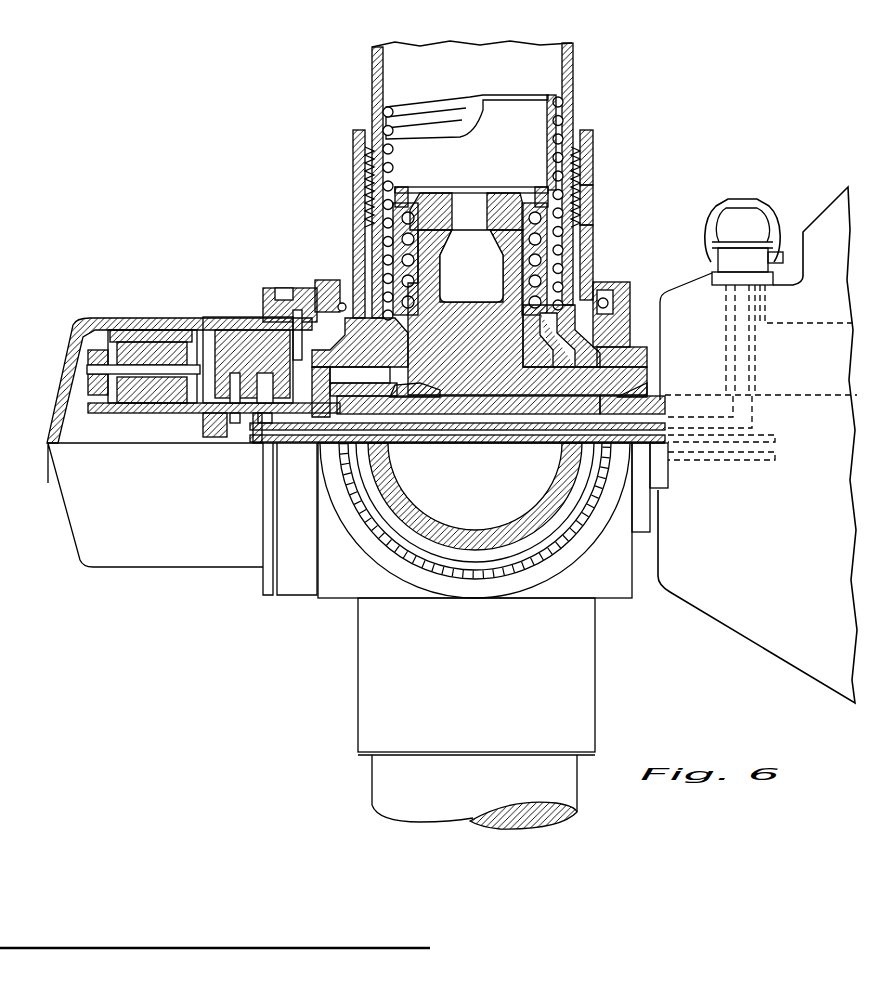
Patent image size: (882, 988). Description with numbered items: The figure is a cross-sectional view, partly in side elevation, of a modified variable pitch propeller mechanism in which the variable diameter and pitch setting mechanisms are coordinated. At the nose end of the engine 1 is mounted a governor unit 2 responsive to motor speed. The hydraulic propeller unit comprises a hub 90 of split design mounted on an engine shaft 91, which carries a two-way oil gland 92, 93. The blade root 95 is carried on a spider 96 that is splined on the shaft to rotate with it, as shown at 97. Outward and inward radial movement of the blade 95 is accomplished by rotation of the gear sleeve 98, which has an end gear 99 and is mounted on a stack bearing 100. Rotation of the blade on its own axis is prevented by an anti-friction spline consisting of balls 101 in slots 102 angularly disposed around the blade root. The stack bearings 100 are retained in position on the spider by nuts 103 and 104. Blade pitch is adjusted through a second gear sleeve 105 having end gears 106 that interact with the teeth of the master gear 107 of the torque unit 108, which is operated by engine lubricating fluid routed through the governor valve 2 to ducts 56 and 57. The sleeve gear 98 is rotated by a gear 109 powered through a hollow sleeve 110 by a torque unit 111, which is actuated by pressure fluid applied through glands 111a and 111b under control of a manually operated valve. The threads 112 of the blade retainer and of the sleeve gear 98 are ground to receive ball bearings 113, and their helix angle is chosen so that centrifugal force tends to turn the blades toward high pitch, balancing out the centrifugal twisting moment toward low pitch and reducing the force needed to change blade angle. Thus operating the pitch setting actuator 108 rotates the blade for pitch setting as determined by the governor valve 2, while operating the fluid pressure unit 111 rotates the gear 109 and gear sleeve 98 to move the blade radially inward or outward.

The engine nose end 1 is at (712, 618).
The governor unit 2 is at (741, 197).
The duct 56 is at (240, 438).
The duct 57 is at (258, 443).
The hub 90 is at (325, 282).
The engine shaft 91 is at (668, 401).
The two-way oil gland 92 is at (531, 443).
The two-way oil gland 93 is at (511, 431).
The blade root 95 is at (574, 81).
The spider 96 is at (462, 298).
The spline 97 is at (470, 415).
The gear sleeve 98 is at (548, 120).
The end gear 99 is at (572, 338).
The stack bearing 100 is at (506, 190).
The balls 101 is at (594, 191).
The slots 102 is at (594, 161).
The nut 103 is at (480, 225).
The nut 104 is at (405, 190).
The gear sleeve 105 is at (594, 251).
The end gears 106 is at (352, 326).
The master gear 107 is at (314, 290).
The torque unit 108 is at (243, 321).
The gear 109 is at (351, 371).
The hollow sleeve 110 is at (162, 421).
The torque unit 111 is at (188, 320).
The gland 111a is at (765, 437).
The gland 111b is at (758, 459).
The threads 112 is at (409, 111).
The ball bearings 113 is at (565, 102).